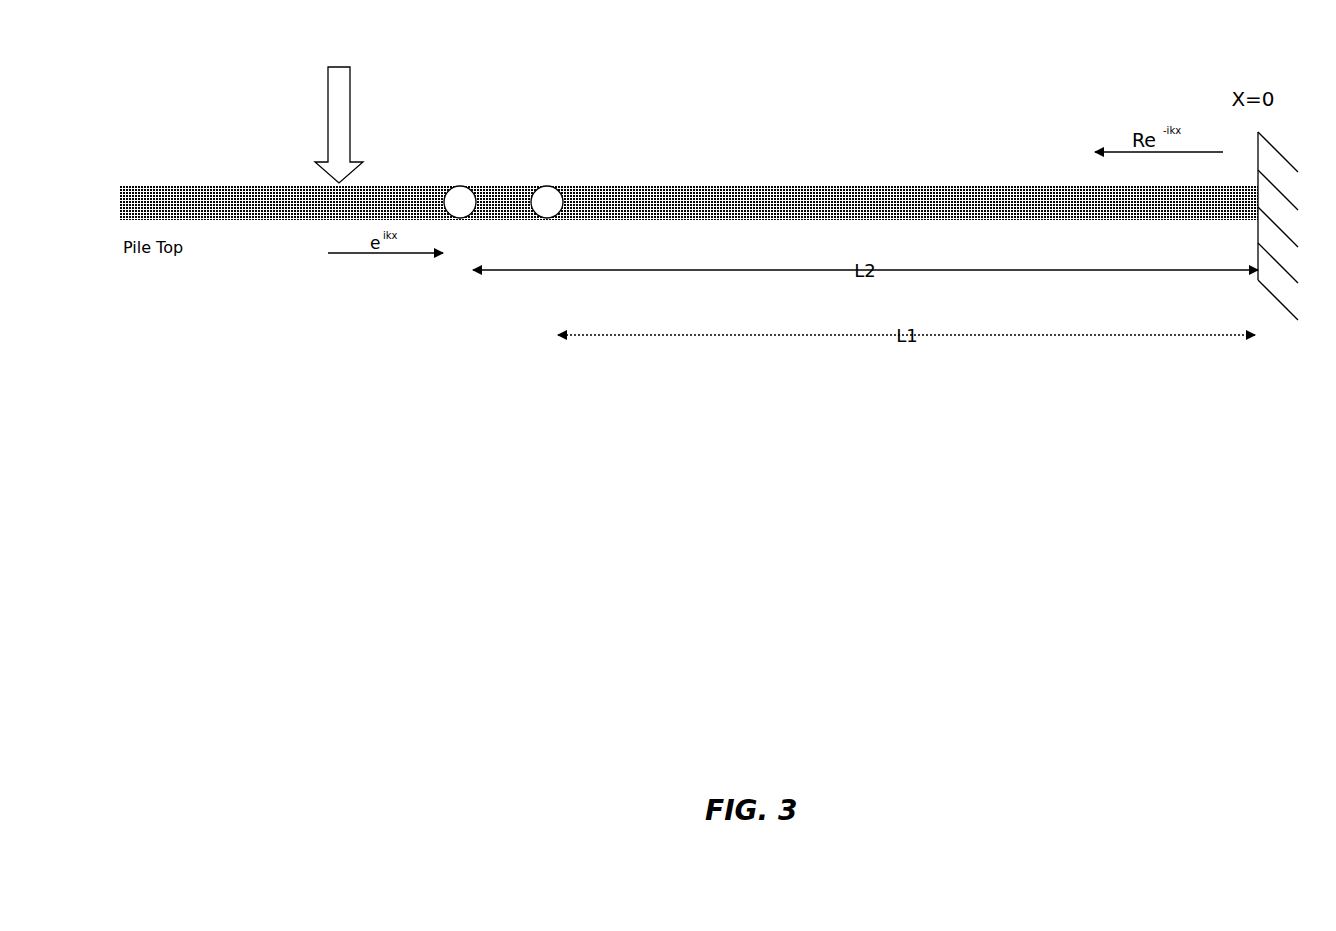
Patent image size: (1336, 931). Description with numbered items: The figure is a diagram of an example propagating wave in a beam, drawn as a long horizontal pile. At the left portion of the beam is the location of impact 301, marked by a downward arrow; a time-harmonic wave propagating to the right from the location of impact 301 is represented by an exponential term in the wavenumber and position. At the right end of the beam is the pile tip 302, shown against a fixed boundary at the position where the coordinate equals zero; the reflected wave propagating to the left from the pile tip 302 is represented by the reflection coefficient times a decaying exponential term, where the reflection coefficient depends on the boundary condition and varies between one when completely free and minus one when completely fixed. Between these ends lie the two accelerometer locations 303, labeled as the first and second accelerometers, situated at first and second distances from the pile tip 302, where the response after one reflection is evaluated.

The location of impact 301 is at (353, 99).
The pile tip 302 is at (1255, 228).
The accelerometer locations 303 is at (545, 185).